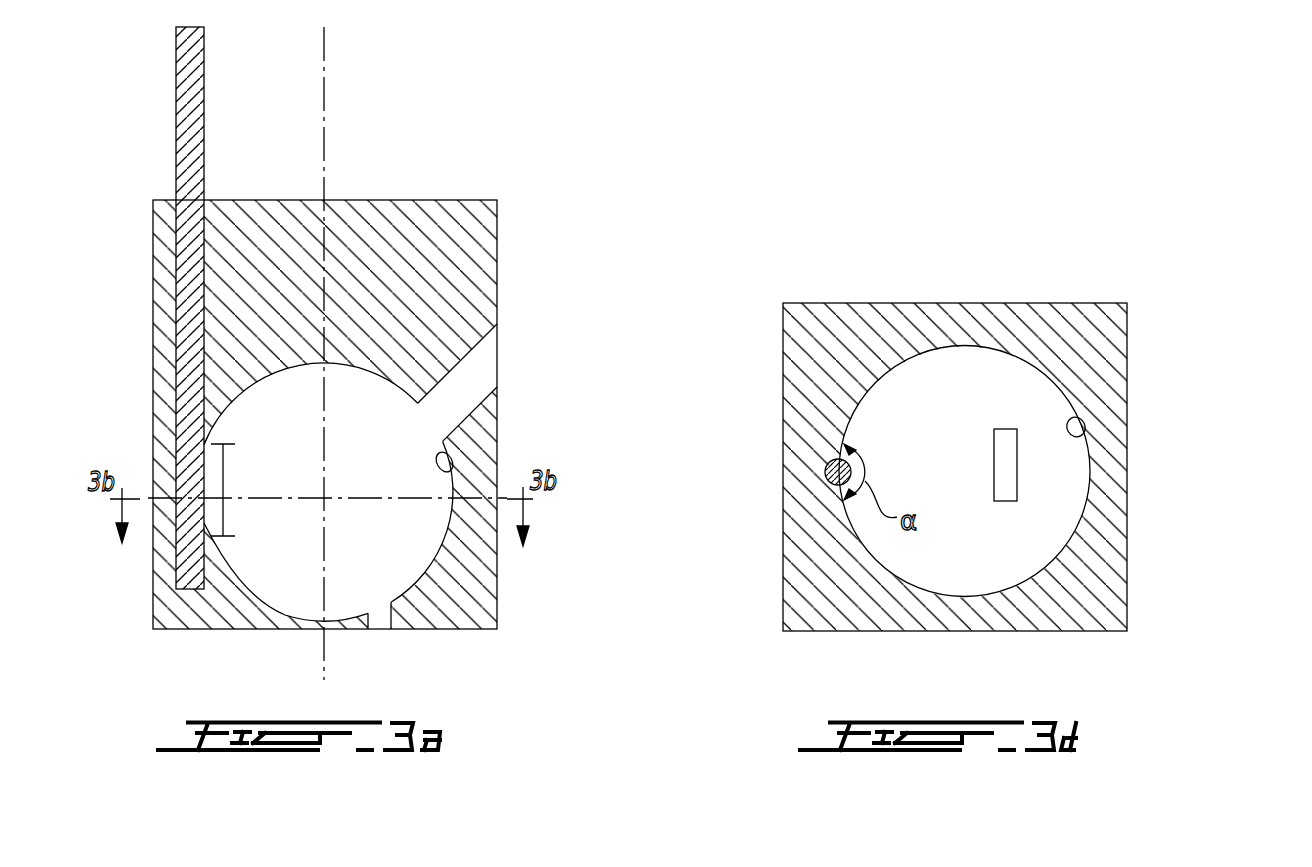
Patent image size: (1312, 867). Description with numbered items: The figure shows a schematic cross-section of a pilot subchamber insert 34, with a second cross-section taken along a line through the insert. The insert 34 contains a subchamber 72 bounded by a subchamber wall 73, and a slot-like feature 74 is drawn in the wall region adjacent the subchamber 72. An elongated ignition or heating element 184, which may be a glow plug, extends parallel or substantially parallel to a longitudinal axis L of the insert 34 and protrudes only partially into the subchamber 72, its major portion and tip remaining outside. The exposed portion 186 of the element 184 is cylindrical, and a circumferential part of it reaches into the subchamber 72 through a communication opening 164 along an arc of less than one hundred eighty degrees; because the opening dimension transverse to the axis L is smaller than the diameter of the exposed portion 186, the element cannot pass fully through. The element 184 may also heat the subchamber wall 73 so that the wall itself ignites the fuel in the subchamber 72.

In FIG. 3a, the insert 34 is at (499, 199).
In FIG. 3b, the insert 34 is at (1128, 304).
In FIG. 3a, the subchamber 72 is at (372, 442).
In FIG. 3b, the subchamber 72 is at (937, 490).
In FIG. 3a, the subchamber wall 73 is at (452, 472).
In FIG. 3b, the subchamber wall 73 is at (1085, 437).
In FIG. 3a, the slot / groove 74 is at (379, 622).
In FIG. 3b, the slot / groove 74 is at (1005, 460).
In FIG. 3a, the elongated ignition or heating element 184 is at (193, 157).
In FIG. 3b, the elongated ignition or heating element 184 is at (826, 470).
In FIG. 3a, the exposed portion 186 is at (237, 484).
In FIG. 3a, the communication opening 164 is at (224, 540).
In FIG. 3a, the longitudinal axis L is at (330, 97).